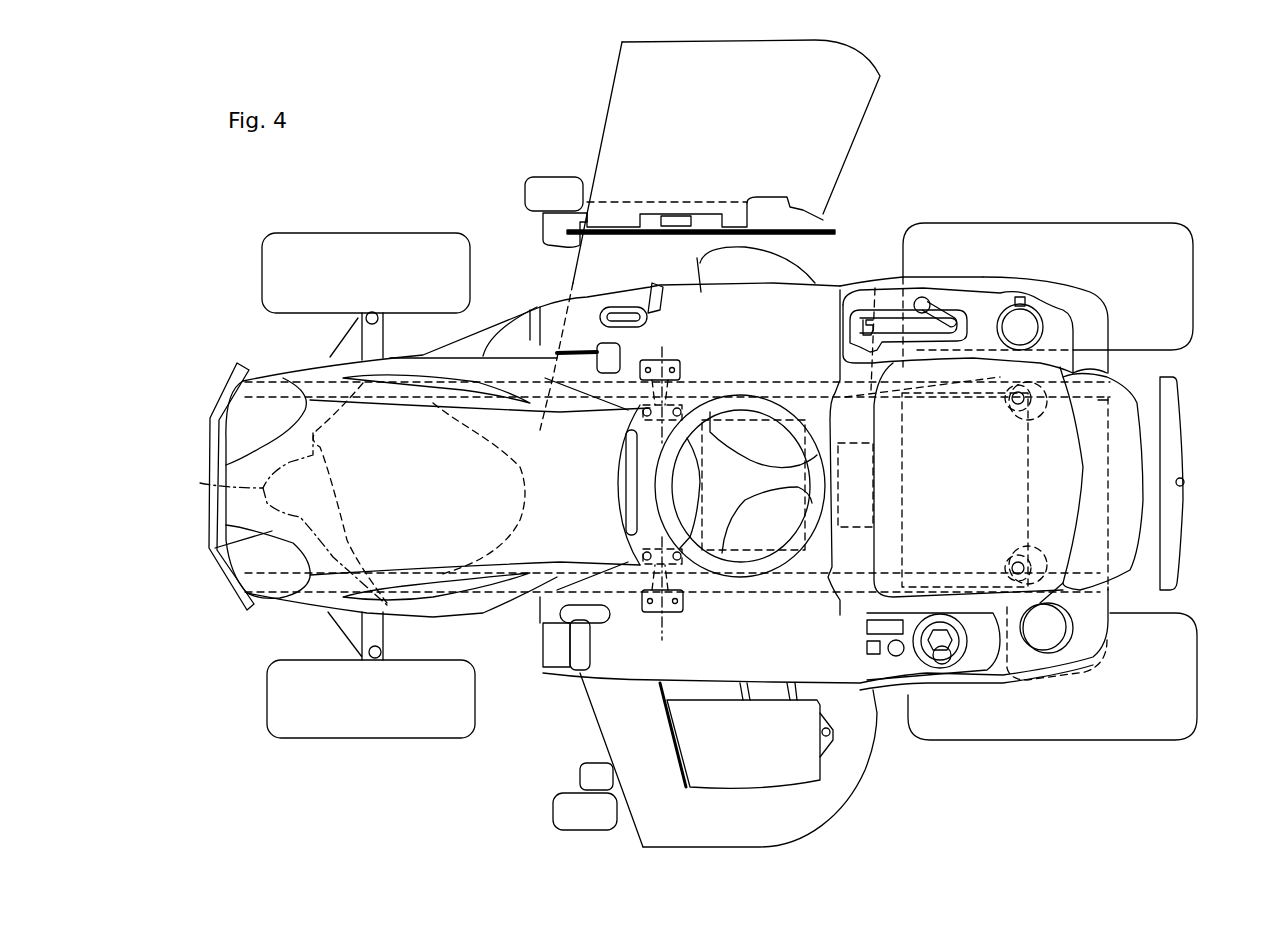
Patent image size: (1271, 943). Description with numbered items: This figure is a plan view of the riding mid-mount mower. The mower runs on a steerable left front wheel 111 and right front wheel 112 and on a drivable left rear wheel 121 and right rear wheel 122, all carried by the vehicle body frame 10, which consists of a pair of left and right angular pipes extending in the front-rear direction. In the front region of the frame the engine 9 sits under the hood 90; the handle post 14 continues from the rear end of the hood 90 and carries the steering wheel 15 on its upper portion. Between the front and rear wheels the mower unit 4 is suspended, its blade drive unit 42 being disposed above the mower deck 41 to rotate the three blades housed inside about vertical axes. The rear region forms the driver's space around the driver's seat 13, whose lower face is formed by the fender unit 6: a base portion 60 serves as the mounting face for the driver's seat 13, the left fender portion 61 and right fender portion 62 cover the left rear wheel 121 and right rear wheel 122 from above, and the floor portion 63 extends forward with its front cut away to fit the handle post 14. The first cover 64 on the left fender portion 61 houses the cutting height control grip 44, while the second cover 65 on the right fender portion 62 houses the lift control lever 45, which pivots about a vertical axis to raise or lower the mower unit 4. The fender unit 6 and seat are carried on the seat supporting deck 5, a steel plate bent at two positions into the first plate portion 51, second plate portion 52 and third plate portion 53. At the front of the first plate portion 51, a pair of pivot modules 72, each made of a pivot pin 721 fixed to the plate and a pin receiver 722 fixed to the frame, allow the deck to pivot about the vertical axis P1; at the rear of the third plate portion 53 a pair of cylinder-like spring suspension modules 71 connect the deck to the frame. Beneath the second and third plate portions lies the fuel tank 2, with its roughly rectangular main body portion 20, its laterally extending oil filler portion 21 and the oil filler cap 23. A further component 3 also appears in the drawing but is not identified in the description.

The fuel tank 2 is at (1115, 521).
The frame member 3 is at (865, 472).
The mower unit 4 is at (585, 712).
The seat supporting deck 5 is at (812, 553).
The fender unit 6 is at (1090, 290).
The engine 9 is at (215, 470).
The vehicle body frame 10 is at (312, 380).
The driver's seat 13 is at (1137, 433).
The handle post 14 is at (690, 580).
The steering wheel 15 is at (742, 396).
The main body portion 20 is at (1150, 460).
The oil filler portion 21 is at (1060, 673).
The oil filler cap 23 is at (1060, 630).
The mower deck 41 is at (860, 793).
The blade drive unit 42 is at (765, 688).
The cutting height control grip 44 is at (940, 660).
The lift control lever 45 is at (937, 305).
The first plate portion 51 is at (753, 413).
The second plate portion 52 is at (840, 378).
The third plate portion 53 is at (1023, 500).
The base portion 60 is at (875, 425).
The left fender portion 61 is at (1013, 690).
The right fender portion 62 is at (985, 278).
The floor portion 63 is at (783, 300).
The first cover 64 is at (927, 673).
The second cover 65 is at (885, 287).
The suspension module 71 is at (1040, 392).
The pivot module 72 is at (648, 424).
The hood 90 is at (210, 562).
The left front wheel 111 is at (374, 736).
The right front wheel 112 is at (358, 240).
The left rear wheel 121 is at (983, 742).
The right rear wheel 122 is at (1040, 230).
The pivot pin 721 is at (680, 383).
The pin receiver 722 is at (642, 412).
The vertical axis P1 is at (663, 493).